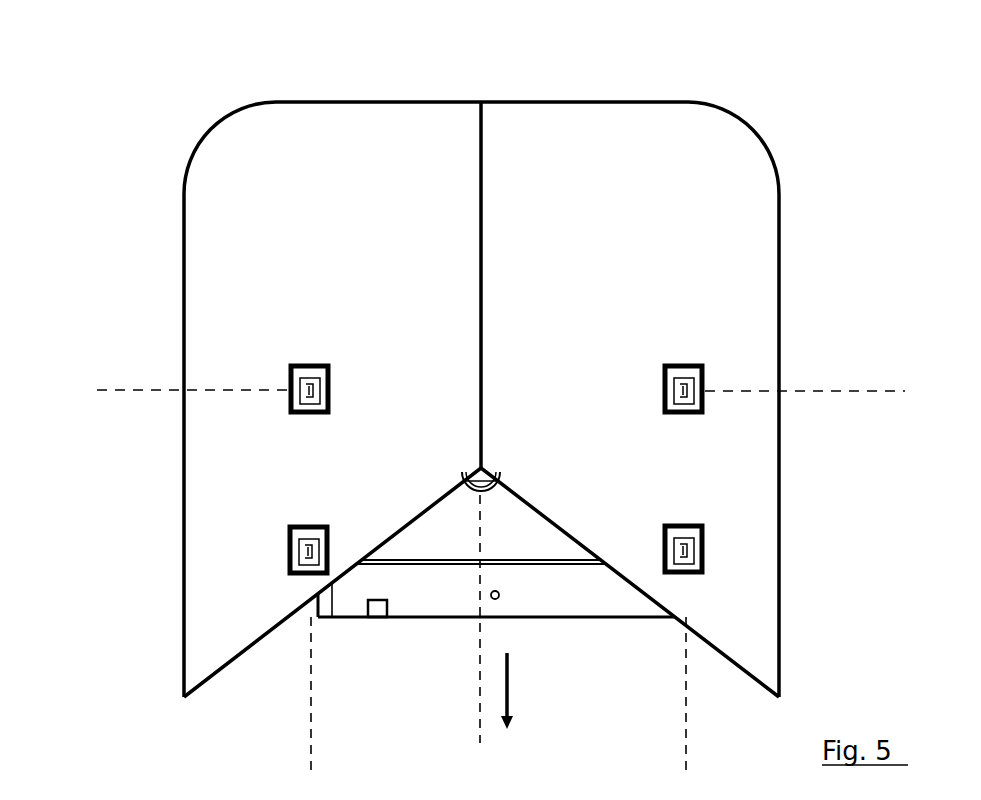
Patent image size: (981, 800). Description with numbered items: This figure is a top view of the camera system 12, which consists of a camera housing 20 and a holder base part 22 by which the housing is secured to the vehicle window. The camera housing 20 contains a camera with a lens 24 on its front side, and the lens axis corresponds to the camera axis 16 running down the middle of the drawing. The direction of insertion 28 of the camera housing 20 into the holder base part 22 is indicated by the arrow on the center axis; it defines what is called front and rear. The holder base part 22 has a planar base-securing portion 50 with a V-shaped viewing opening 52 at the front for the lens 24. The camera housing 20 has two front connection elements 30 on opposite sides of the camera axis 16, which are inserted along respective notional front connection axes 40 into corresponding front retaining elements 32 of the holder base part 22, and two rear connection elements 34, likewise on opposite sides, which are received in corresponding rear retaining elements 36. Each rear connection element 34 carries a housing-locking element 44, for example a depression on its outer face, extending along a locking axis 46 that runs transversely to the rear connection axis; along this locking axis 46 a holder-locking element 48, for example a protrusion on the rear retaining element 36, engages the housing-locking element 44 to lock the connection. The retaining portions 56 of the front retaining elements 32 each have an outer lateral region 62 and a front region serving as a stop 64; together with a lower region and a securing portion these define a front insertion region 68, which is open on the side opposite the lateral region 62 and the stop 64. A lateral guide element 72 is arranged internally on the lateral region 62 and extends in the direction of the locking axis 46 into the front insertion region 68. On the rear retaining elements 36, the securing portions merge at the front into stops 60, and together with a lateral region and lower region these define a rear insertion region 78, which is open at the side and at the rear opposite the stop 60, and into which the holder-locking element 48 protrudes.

The camera system 12 is at (97, 137).
The camera axis 16 is at (478, 735).
The camera housing 20 is at (601, 625).
The holder base part 22 is at (625, 99).
The lens 24 is at (488, 466).
The direction of insertion 28 is at (510, 712).
The front connection element 30 is at (330, 540).
The front retaining element 32 is at (284, 540).
The rear connection element 34 is at (331, 380).
The rear retaining element 36 is at (284, 371).
The front connection axis 40 is at (310, 722).
The housing-locking element 44 is at (312, 364).
The locking axis 46 is at (100, 393).
The holder-locking element 48 is at (298, 364).
The base-securing portion 50 is at (408, 150).
The viewing opening 52 is at (396, 675).
The retaining portion 56 is at (288, 554).
The stop 60 is at (310, 414).
The lateral region 62 is at (288, 551).
The stop 64 is at (312, 576).
The front insertion region 68 is at (300, 575).
The lateral guide element 72 is at (288, 548).
The rear insertion region 78 is at (290, 408).